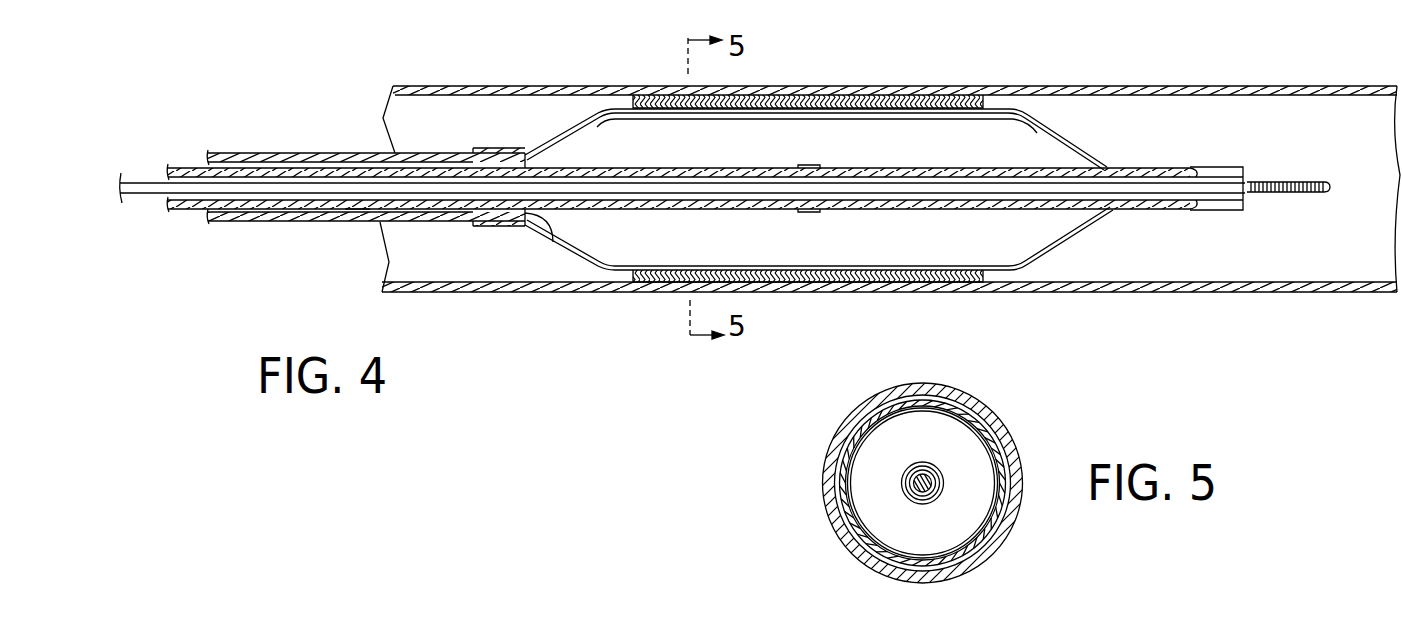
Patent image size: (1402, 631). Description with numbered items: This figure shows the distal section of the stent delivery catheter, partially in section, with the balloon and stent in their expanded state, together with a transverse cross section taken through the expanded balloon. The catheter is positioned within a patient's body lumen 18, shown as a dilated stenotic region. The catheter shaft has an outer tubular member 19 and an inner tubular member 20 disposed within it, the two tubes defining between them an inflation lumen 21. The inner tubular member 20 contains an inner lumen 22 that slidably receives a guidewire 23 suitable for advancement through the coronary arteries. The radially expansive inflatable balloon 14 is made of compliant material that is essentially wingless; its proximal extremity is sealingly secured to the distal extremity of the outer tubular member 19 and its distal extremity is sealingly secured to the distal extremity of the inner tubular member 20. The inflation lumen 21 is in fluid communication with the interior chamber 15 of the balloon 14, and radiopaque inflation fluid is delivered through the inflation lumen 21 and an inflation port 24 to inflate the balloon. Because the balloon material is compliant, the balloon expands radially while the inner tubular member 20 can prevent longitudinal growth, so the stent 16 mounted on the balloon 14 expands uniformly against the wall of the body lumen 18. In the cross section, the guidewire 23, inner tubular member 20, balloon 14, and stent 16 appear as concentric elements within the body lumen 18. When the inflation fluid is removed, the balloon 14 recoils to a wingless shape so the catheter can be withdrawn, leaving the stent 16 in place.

In FIG. 4, the inflatable balloon 14 is at (562, 128).
In FIG. 5, the inflatable balloon 14 is at (850, 423).
In FIG. 4, the interior chamber 15 is at (1057, 148).
In FIG. 5, the interior chamber 15 is at (870, 478).
In FIG. 4, the stent 16 is at (923, 95).
In FIG. 5, the stent 16 is at (967, 412).
In FIG. 4, the body lumen 18 is at (1252, 95).
In FIG. 5, the body lumen 18 is at (1000, 527).
In FIG. 4, the outer tubular member 19 is at (242, 152).
In FIG. 4, the inner tubular member 20 is at (300, 167).
In FIG. 5, the inner tubular member 20 is at (907, 498).
In FIG. 4, the inflation lumen 21 is at (357, 209).
In FIG. 4, the inner lumen 22 is at (1243, 196).
In FIG. 5, the inner lumen 22 is at (921, 462).
In FIG. 4, the guidewire 23 is at (138, 195).
In FIG. 5, the guidewire 23 is at (938, 493).
In FIG. 4, the inflation port 24 is at (550, 240).